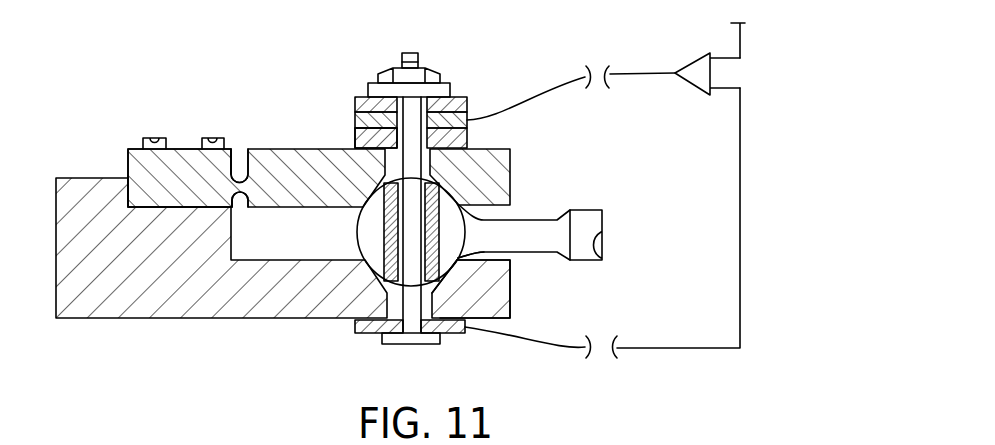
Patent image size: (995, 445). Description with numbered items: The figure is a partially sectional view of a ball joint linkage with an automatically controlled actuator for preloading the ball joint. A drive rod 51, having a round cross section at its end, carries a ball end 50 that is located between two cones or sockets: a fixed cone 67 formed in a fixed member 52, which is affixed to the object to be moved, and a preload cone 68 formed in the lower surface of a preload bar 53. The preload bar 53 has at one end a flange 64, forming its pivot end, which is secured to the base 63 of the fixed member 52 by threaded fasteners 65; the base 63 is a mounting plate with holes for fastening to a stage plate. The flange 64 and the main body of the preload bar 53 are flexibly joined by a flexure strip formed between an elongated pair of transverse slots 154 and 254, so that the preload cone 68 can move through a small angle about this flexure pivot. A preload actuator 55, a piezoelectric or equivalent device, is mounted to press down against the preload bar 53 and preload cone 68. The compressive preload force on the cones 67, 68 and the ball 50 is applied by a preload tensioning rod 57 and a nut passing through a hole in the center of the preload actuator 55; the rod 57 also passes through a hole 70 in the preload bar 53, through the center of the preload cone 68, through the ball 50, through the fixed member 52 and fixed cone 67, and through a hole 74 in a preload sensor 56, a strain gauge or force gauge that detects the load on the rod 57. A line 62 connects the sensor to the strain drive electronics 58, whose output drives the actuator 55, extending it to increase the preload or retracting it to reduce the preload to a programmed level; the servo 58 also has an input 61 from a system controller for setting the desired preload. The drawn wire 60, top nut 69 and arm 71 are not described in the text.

The ball end 50 is at (461, 201).
The drive rod 51 is at (586, 210).
The fixed member 52 is at (497, 313).
The preload bar 53 is at (300, 160).
The preload actuator 55 is at (466, 97).
The preload sensor 56 is at (372, 328).
The preload tensioning rod 57 is at (417, 308).
The strain drive electronics 58 is at (693, 63).
The lead wire 60 is at (563, 76).
The input 61 is at (742, 43).
The line 62 is at (575, 347).
The base 63 is at (178, 318).
The flange 64 is at (137, 160).
The threaded fasteners 65 is at (157, 138).
The fixed cone 67 is at (470, 258).
The preload cone 68 is at (373, 192).
The nut 69 is at (432, 67).
The hole 70 is at (356, 141).
The arm 71 is at (437, 232).
The hole 74 is at (395, 313).
The transverse slot 154 is at (240, 182).
The transverse slot 254 is at (238, 201).